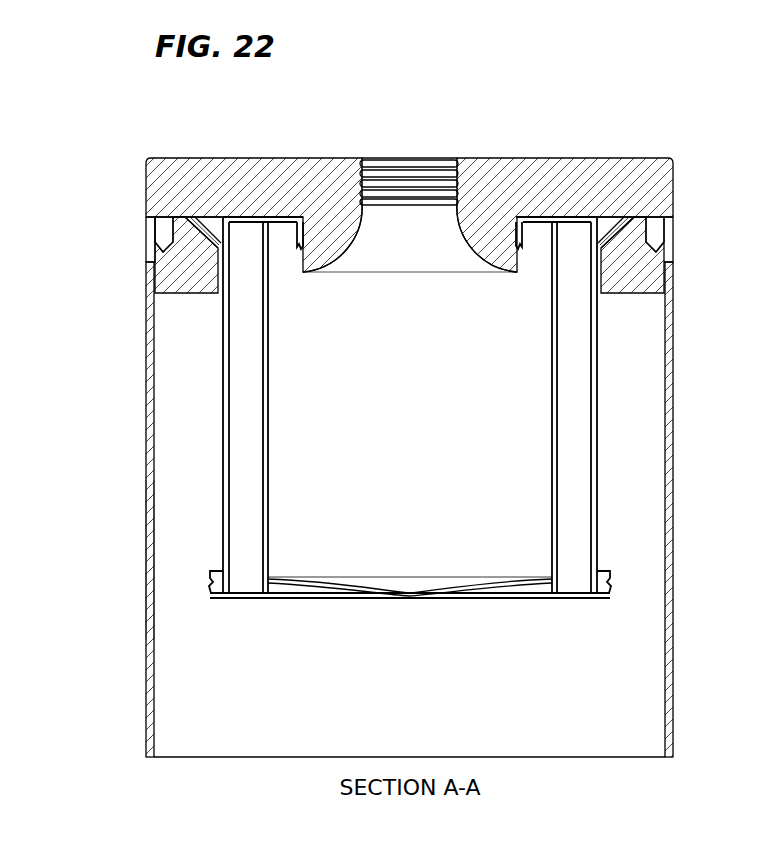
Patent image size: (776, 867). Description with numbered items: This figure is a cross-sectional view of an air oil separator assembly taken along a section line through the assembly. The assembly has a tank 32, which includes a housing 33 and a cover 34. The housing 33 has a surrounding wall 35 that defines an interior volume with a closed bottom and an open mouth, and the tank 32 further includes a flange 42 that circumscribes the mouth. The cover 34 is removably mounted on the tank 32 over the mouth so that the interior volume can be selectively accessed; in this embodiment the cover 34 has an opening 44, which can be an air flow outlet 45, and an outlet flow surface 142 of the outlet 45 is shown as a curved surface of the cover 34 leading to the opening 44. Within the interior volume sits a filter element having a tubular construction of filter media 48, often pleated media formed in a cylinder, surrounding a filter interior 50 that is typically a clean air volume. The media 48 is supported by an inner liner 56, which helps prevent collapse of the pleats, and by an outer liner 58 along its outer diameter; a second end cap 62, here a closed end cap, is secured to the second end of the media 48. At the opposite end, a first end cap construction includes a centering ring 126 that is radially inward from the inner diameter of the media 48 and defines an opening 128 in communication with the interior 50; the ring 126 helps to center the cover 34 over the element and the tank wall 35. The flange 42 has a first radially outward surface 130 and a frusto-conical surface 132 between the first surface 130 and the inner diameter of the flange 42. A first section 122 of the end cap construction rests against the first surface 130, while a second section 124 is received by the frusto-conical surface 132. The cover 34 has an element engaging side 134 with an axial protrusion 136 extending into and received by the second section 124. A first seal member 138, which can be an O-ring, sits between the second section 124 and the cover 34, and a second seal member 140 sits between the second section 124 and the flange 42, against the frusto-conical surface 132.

The cover 34 is at (625, 157).
The opening 44 is at (371, 161).
The air flow outlet 45 is at (448, 160).
The opening 128 is at (510, 216).
The element engaging side 134 is at (575, 216).
The first seal member 138 is at (201, 236).
The frusto-conical surface 132 is at (200, 233).
The first radially outward surface 130 is at (155, 218).
The first section 122 is at (655, 216).
The flange 42 is at (152, 248).
The second section 124 is at (617, 237).
The second seal member 140 is at (200, 240).
The outlet flow surface 142 is at (343, 253).
The centering ring 126 is at (279, 246).
The axial protrusion 136 is at (606, 232).
The filter interior 50 is at (267, 408).
The filter media 48 is at (252, 478).
The inner liner 56 is at (268, 521).
The tank 32 is at (147, 463).
The housing 33 is at (147, 518).
The surrounding wall 35 is at (147, 587).
The outer liner 58 is at (226, 534).
The second end cap 62 is at (330, 588).